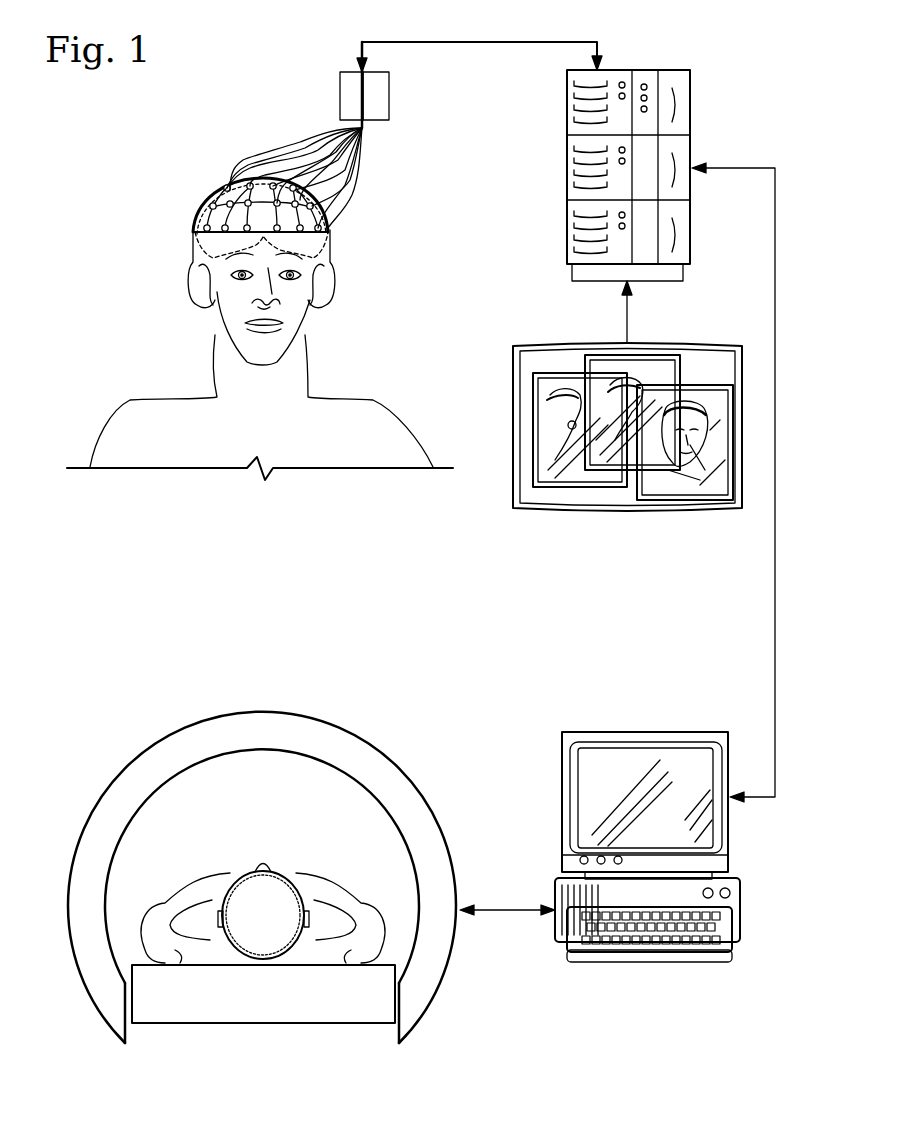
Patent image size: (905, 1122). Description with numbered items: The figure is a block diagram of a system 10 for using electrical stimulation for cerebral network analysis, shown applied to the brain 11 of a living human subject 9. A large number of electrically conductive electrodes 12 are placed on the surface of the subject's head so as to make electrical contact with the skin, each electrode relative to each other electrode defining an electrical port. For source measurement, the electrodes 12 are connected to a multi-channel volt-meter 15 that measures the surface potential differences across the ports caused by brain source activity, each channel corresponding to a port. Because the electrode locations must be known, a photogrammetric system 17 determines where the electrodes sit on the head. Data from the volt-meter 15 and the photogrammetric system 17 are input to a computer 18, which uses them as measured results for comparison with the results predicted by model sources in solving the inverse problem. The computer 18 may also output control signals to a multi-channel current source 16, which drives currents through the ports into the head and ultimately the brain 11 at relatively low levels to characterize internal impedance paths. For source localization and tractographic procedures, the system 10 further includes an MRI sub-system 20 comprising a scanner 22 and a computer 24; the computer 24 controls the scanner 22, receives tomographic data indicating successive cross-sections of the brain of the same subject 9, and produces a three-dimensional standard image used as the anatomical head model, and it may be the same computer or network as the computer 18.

The living human subject 9 is at (345, 392).
The system 10 is at (733, 32).
The brain 11 is at (205, 292).
The electrodes 12 is at (198, 215).
The multi-channel volt-meter 15 is at (352, 97).
The multi-channel current source 16 is at (377, 97).
The photogrammetric system 17 is at (705, 345).
The computer 18 is at (653, 70).
The MRI sub-system 20 is at (590, 678).
The scanner 22 is at (262, 712).
The computer 24 is at (686, 732).